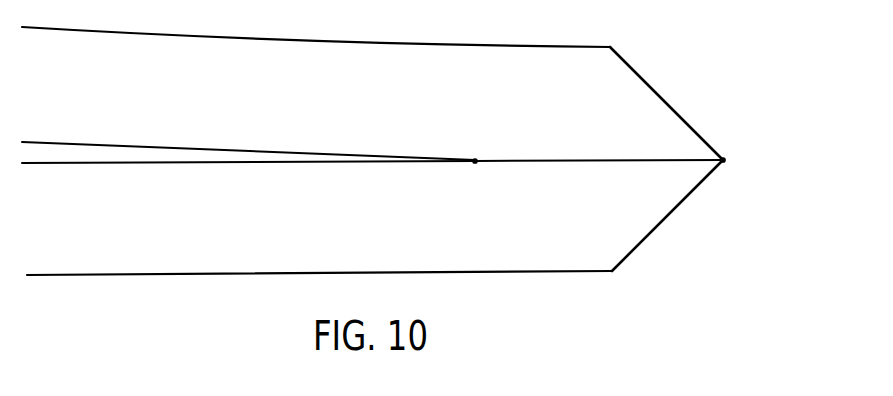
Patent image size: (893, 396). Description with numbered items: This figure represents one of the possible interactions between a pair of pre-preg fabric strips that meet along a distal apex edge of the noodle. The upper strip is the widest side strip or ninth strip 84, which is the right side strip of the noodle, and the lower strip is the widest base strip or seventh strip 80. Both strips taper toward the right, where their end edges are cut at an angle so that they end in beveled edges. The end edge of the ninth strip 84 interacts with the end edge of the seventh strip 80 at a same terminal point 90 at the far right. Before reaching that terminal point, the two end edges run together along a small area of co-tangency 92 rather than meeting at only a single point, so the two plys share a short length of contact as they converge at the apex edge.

The ninth strip 84 is at (428, 62).
The seventh strip 80 is at (206, 259).
The terminal point 90 is at (728, 153).
The area of co-tangency 92 is at (716, 171).